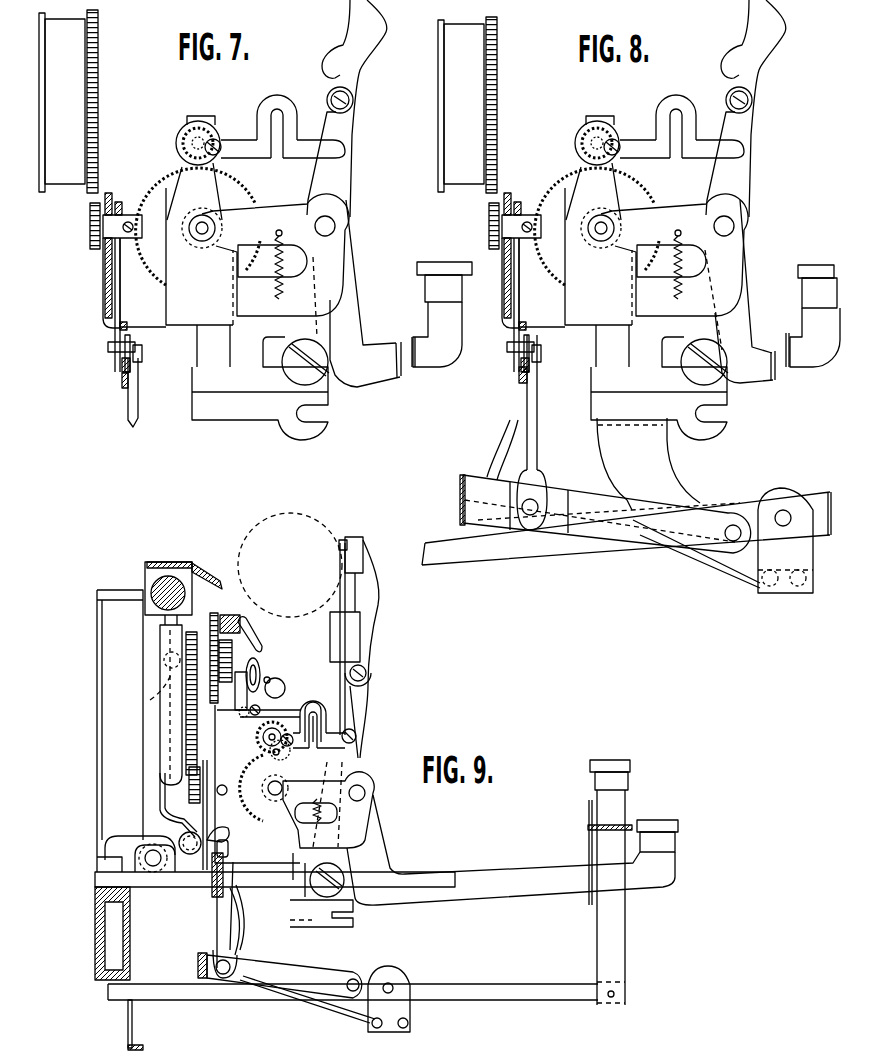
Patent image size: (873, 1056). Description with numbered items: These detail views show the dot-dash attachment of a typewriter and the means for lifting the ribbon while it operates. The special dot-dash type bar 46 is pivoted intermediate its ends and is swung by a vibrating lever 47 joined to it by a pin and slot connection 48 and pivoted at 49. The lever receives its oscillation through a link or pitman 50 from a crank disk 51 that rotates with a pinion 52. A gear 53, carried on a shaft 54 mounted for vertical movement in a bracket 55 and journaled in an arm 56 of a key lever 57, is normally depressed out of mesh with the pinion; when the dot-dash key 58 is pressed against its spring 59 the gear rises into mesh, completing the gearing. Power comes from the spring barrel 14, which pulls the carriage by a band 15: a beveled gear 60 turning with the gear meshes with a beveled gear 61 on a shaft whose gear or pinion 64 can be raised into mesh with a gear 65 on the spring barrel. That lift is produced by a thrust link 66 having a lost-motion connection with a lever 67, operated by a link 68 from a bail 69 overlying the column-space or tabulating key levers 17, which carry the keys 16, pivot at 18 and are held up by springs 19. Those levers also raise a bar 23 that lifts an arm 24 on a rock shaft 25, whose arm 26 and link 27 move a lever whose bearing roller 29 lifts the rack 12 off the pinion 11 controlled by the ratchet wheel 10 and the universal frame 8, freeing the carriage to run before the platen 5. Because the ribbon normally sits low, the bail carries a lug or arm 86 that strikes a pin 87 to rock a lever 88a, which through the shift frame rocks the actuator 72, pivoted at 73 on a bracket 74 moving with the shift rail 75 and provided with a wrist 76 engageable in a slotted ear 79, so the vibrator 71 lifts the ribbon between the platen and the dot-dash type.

In FIG. 9, the platen 5 is at (238, 548).
In FIG. 9, the universal frame 8 is at (240, 717).
In FIG. 9, the ratchet wheel 10 is at (212, 615).
In FIG. 9, the pinion 11 is at (235, 685).
In FIG. 9, the rack 12 is at (240, 626).
In FIG. 7, the spring barrel 14 is at (62, 102).
In FIG. 8, the spring barrel 14 is at (461, 106).
In FIG. 9, the spring barrel 14 is at (160, 708).
In FIG. 9, the band 15 is at (164, 618).
In FIG. 9, the column-space or tabulating key 16 is at (628, 760).
In FIG. 8, the lever 17 is at (816, 478).
In FIG. 9, the lever 17 is at (190, 995).
In FIG. 9, the pivot 18 is at (389, 999).
In FIG. 8, the spring 19 is at (724, 572).
In FIG. 9, the spring 19 is at (340, 1016).
In FIG. 9, the bar 23 is at (140, 935).
In FIG. 9, the arm 24 is at (97, 848).
In FIG. 9, the rock shaft 25 is at (153, 868).
In FIG. 9, the arm 26 is at (180, 836).
In FIG. 9, the link 27 is at (186, 670).
In FIG. 9, the bearing roller 29 is at (257, 647).
In FIG. 7, the dot-dash type bar 46 is at (385, 50).
In FIG. 8, the dot-dash type bar 46 is at (765, 108).
In FIG. 9, the dot-dash type bar 46 is at (375, 596).
In FIG. 7, the vibrating lever 47 is at (327, 141).
In FIG. 8, the vibrating lever 47 is at (682, 134).
In FIG. 9, the vibrating lever 47 is at (358, 768).
In FIG. 7, the pin and slot connection 48 is at (327, 100).
In FIG. 8, the pin and slot connection 48 is at (762, 100).
In FIG. 9, the pin and slot connection 48 is at (370, 674).
In FIG. 7, the pivot 49 is at (288, 366).
In FIG. 8, the pivot 49 is at (659, 388).
In FIG. 9, the pivot 49 is at (321, 895).
In FIG. 7, the link or pitman 50 is at (275, 96).
In FIG. 8, the link or pitman 50 is at (678, 112).
In FIG. 9, the link or pitman 50 is at (320, 748).
In FIG. 7, the crank disk 51 is at (183, 127).
In FIG. 8, the crank disk 51 is at (586, 131).
In FIG. 9, the crank disk 51 is at (288, 756).
In FIG. 7, the pinion 52 is at (212, 138).
In FIG. 8, the pinion 52 is at (618, 120).
In FIG. 9, the pinion 52 is at (275, 756).
In FIG. 7, the gear 53 is at (170, 180).
In FIG. 8, the gear 53 is at (589, 217).
In FIG. 9, the gear 53 is at (250, 770).
In FIG. 7, the shaft 54 is at (196, 238).
In FIG. 8, the shaft 54 is at (599, 239).
In FIG. 9, the shaft 54 is at (275, 796).
In FIG. 7, the bracket 55 is at (176, 277).
In FIG. 8, the bracket 55 is at (575, 277).
In FIG. 9, the bracket 55 is at (260, 801).
In FIG. 7, the arm 56 is at (285, 205).
In FIG. 8, the arm 56 is at (674, 245).
In FIG. 9, the arm 56 is at (294, 818).
In FIG. 7, the key lever 57 is at (396, 343).
In FIG. 8, the key lever 57 is at (773, 350).
In FIG. 9, the key lever 57 is at (511, 850).
In FIG. 7, the dot-dash key 58 is at (417, 266).
In FIG. 8, the dot-dash key 58 is at (800, 268).
In FIG. 9, the dot-dash key 58 is at (662, 820).
In FIG. 7, the spring 59 is at (272, 276).
In FIG. 8, the spring 59 is at (656, 269).
In FIG. 9, the spring 59 is at (316, 823).
In FIG. 7, the beveled gear 60 is at (196, 206).
In FIG. 8, the beveled gear 60 is at (593, 191).
In FIG. 7, the beveled gear 61 is at (236, 252).
In FIG. 8, the beveled gear 61 is at (626, 218).
In FIG. 7, the gear or pinion 64 is at (91, 250).
In FIG. 8, the gear or pinion 64 is at (496, 220).
In FIG. 9, the gear or pinion 64 is at (189, 790).
In FIG. 7, the gear 65 is at (99, 150).
In FIG. 8, the gear 65 is at (507, 105).
In FIG. 9, the gear 65 is at (200, 762).
In FIG. 7, the thrust link 66 is at (129, 291).
In FIG. 8, the thrust link 66 is at (525, 305).
In FIG. 9, the thrust link 66 is at (212, 870).
In FIG. 7, the lever 67 is at (147, 339).
In FIG. 8, the lever 67 is at (536, 348).
In FIG. 7, the link 68 is at (138, 393).
In FIG. 8, the link 68 is at (533, 392).
In FIG. 9, the link 68 is at (216, 913).
In FIG. 8, the bail 69 is at (462, 501).
In FIG. 9, the bail 69 is at (198, 962).
In FIG. 9, the vibrator 71 is at (340, 580).
In FIG. 9, the actuator 72 is at (314, 708).
In FIG. 9, the pivot 73 is at (258, 735).
In FIG. 9, the bracket 74 is at (261, 709).
In FIG. 9, the shift rail 75 is at (285, 684).
In FIG. 9, the wrist 76 is at (270, 677).
In FIG. 9, the ear 79 is at (260, 666).
In FIG. 8, the lug or arm 86 is at (503, 433).
In FIG. 9, the lug or arm 86 is at (242, 913).
In FIG. 9, the pin 87 is at (237, 849).
In FIG. 9, the lever 88a is at (236, 832).